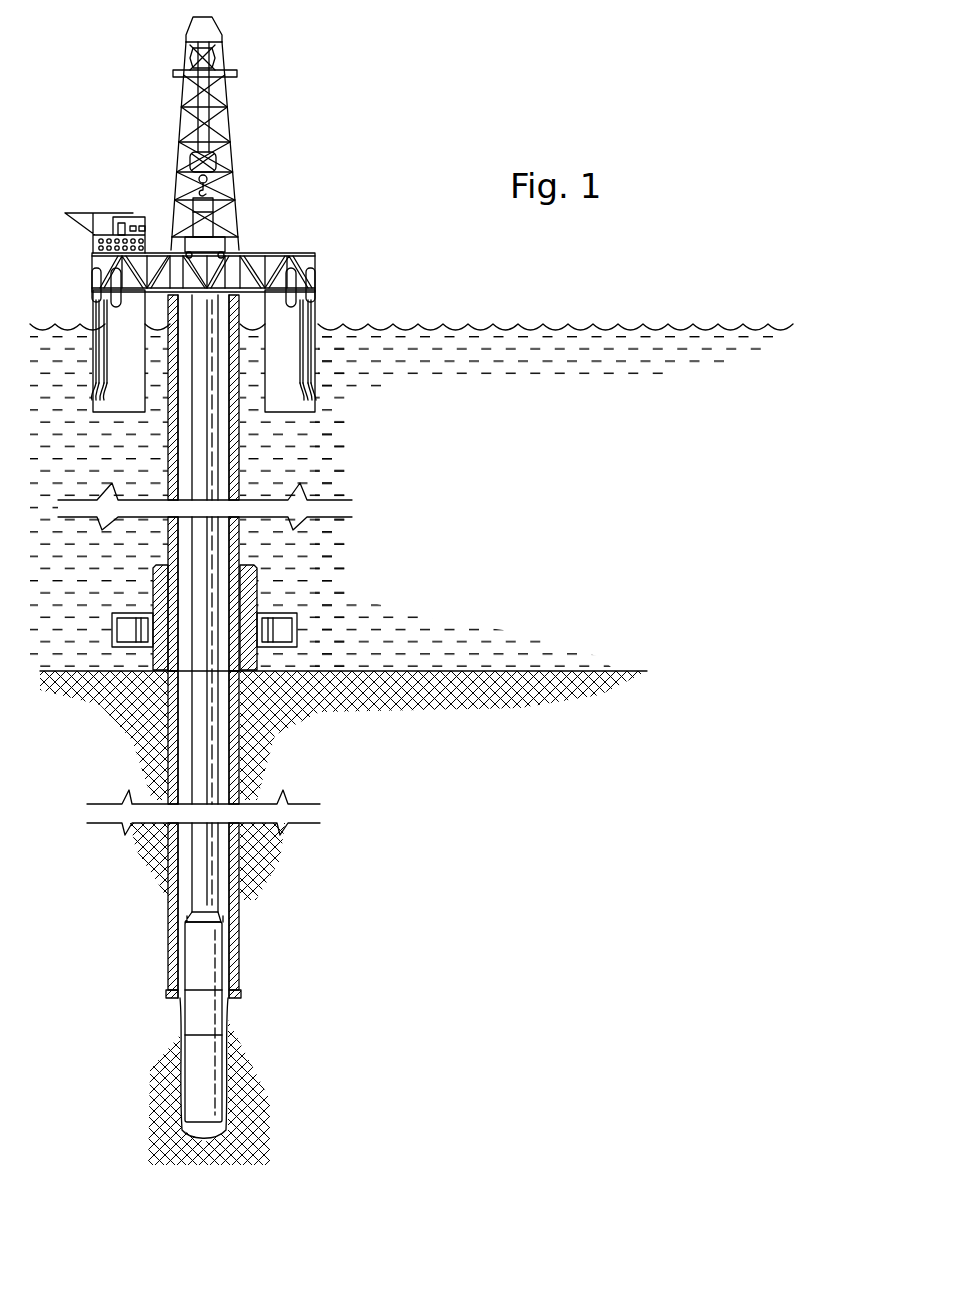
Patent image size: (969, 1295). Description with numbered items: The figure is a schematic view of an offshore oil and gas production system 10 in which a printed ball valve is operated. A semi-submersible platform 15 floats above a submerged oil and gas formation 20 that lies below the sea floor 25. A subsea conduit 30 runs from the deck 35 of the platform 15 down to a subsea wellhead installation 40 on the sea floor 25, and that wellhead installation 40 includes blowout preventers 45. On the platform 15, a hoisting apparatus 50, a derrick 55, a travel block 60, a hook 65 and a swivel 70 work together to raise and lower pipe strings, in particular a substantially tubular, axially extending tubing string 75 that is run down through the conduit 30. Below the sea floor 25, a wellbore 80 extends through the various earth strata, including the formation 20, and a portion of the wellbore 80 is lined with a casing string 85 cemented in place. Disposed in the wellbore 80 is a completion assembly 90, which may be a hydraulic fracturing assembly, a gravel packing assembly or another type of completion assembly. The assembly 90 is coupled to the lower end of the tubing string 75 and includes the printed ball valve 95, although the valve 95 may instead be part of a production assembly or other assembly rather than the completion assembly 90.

The drilling system 10 is at (330, 132).
The semi-submersible platform 15 is at (304, 252).
The oil and gas formation 20 is at (434, 916).
The sea floor 25 is at (630, 670).
The subsea conduit 30 is at (243, 428).
The deck 35 is at (160, 252).
The subsea wellhead installation 40 is at (150, 590).
The blowout preventers 45 is at (286, 626).
The hoisting apparatus 50 is at (222, 240).
The derrick 55 is at (186, 56).
The travel block 60 is at (196, 165).
The hook 65 is at (214, 182).
The swivel 70 is at (220, 205).
The tubing string 75 is at (196, 769).
The wellbore 80 is at (222, 780).
The casing string 85 is at (236, 730).
The completion assembly 90 is at (244, 977).
The printed ball valve 95 is at (196, 1012).